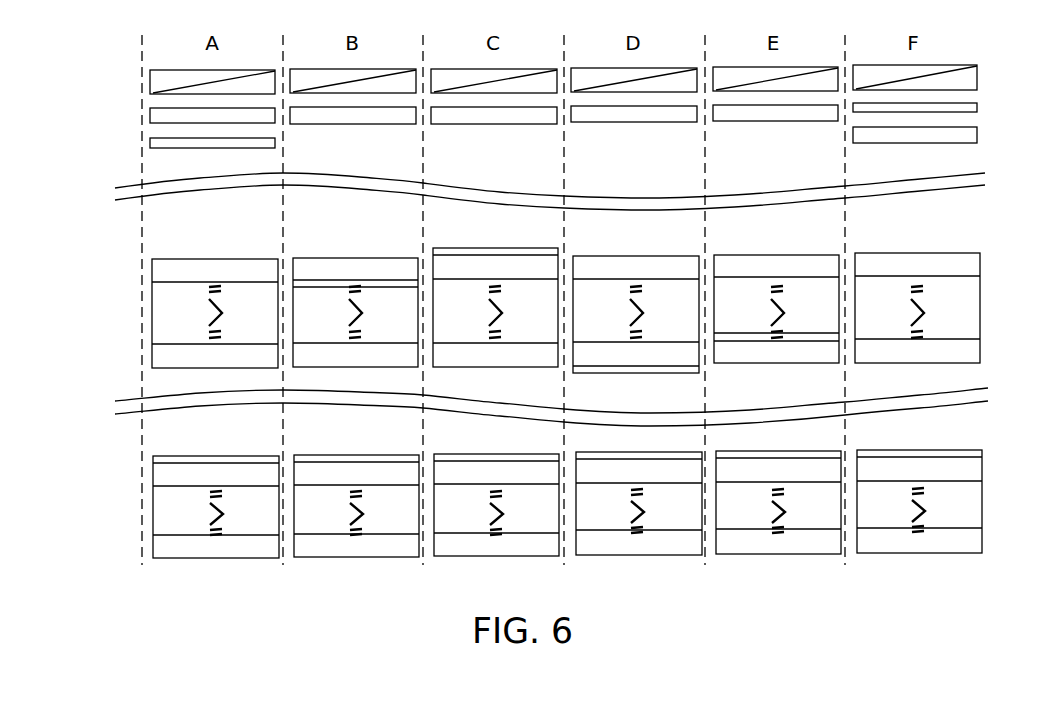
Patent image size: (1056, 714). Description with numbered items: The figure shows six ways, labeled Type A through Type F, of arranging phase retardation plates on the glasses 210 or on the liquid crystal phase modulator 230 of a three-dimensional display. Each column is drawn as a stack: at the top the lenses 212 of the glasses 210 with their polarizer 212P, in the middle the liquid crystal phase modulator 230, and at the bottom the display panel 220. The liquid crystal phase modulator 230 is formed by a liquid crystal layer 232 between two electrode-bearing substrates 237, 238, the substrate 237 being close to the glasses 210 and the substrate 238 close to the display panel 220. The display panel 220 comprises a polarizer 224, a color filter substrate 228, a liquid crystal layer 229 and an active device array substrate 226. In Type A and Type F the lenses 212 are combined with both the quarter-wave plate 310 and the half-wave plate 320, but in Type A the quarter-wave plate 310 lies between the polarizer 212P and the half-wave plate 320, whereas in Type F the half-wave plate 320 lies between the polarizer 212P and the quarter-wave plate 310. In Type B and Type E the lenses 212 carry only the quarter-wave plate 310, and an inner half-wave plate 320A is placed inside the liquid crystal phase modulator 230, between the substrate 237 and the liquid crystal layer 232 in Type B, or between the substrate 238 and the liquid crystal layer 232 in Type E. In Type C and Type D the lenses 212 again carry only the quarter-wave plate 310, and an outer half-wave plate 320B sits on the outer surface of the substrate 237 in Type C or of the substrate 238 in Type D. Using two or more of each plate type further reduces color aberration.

The lens 212 is at (77, 148).
The glasses 210 is at (535, 110).
The polarizer of the lenses 212P is at (535, 81).
The quarter-wave plate 310 is at (1005, 137).
The half-wave plate 320 is at (1008, 102).
The liquid crystal phase modulator 230 is at (79, 255).
The substrate 237 is at (542, 272).
The liquid crystal layer 232 is at (514, 312).
The substrate 238 is at (542, 354).
The inner half-wave plate 320A is at (388, 283).
The outer half-wave plate 320B is at (464, 253).
The display panel 220 is at (79, 457).
The polarizer 224 is at (543, 451).
The color filter substrate 228 is at (543, 477).
The liquid crystal layer 229 is at (515, 511).
The active device array substrate 226 is at (543, 544).